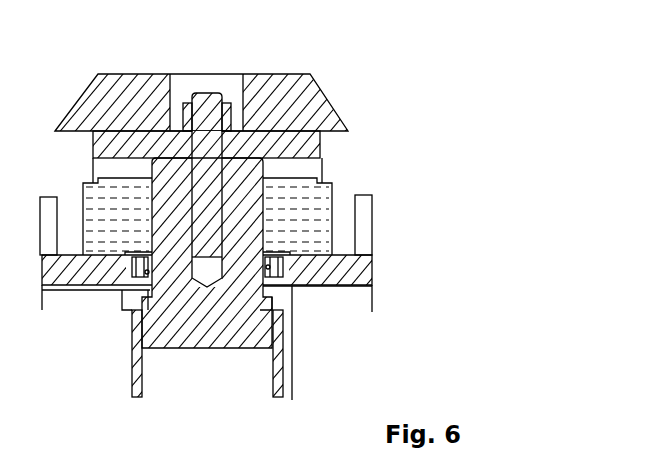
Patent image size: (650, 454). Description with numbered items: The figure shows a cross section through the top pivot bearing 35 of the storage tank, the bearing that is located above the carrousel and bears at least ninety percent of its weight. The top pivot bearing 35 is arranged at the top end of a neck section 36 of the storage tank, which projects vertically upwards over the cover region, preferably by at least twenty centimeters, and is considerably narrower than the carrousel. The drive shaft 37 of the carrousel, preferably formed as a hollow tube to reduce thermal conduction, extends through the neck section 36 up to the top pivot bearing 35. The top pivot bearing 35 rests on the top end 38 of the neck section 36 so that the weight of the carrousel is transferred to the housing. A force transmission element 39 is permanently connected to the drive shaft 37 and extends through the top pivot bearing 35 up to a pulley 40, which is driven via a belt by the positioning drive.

The top pivot bearing 35 is at (407, 149).
The neck section 36 is at (372, 298).
The drive shaft 37 is at (275, 367).
The top end 38 is at (368, 266).
The force transmission element 39 is at (170, 305).
The pulley 40 is at (283, 85).